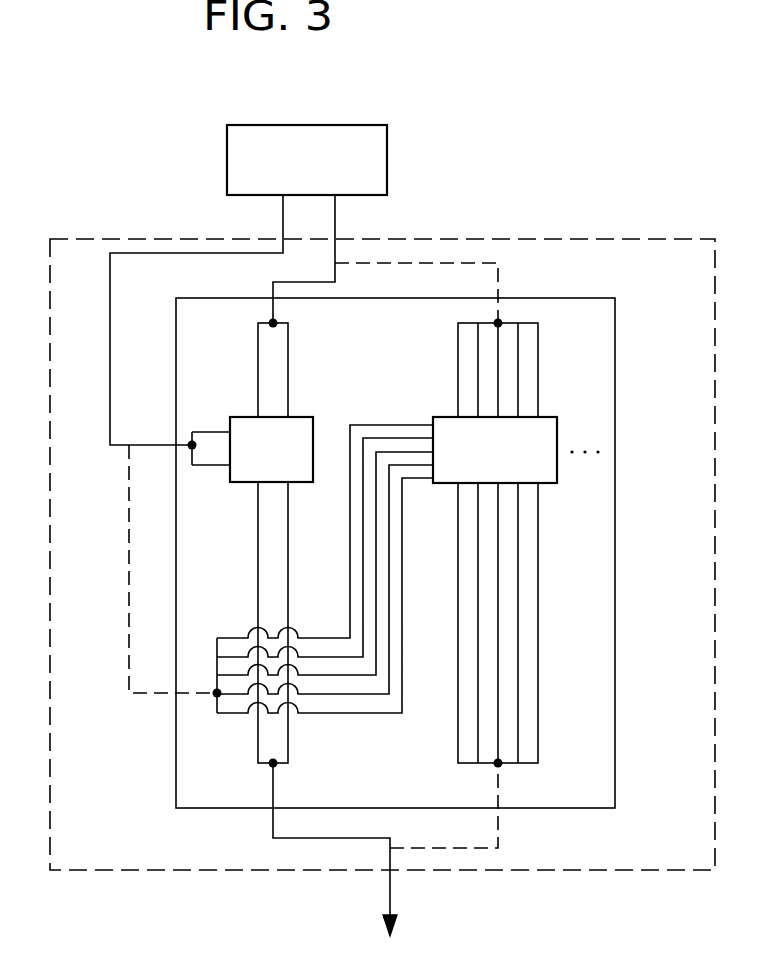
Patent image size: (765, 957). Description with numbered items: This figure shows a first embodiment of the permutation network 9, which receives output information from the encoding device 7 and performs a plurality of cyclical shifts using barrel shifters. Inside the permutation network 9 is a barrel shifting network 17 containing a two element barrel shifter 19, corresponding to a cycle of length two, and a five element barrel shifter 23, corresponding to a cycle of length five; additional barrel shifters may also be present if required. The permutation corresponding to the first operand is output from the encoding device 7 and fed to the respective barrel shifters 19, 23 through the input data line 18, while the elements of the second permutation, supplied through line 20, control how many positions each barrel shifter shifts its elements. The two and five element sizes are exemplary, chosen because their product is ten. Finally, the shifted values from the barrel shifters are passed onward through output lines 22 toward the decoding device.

The encoding device 7 is at (387, 157).
The permutation network 9 is at (140, 238).
The barrel shifting network 17 is at (615, 390).
The input data line 18 is at (335, 207).
The barrel shifter 19 is at (250, 482).
The line 20 is at (283, 224).
The output lines 22 is at (277, 772).
The barrel shifter 23 is at (557, 432).